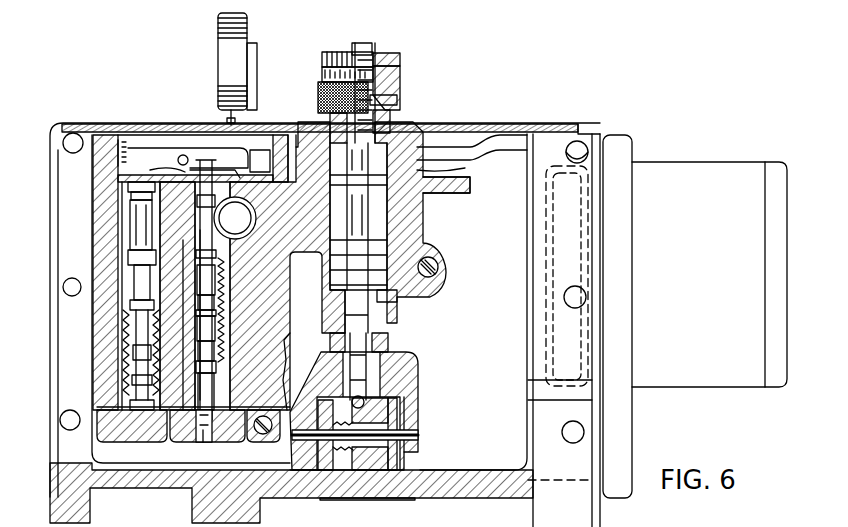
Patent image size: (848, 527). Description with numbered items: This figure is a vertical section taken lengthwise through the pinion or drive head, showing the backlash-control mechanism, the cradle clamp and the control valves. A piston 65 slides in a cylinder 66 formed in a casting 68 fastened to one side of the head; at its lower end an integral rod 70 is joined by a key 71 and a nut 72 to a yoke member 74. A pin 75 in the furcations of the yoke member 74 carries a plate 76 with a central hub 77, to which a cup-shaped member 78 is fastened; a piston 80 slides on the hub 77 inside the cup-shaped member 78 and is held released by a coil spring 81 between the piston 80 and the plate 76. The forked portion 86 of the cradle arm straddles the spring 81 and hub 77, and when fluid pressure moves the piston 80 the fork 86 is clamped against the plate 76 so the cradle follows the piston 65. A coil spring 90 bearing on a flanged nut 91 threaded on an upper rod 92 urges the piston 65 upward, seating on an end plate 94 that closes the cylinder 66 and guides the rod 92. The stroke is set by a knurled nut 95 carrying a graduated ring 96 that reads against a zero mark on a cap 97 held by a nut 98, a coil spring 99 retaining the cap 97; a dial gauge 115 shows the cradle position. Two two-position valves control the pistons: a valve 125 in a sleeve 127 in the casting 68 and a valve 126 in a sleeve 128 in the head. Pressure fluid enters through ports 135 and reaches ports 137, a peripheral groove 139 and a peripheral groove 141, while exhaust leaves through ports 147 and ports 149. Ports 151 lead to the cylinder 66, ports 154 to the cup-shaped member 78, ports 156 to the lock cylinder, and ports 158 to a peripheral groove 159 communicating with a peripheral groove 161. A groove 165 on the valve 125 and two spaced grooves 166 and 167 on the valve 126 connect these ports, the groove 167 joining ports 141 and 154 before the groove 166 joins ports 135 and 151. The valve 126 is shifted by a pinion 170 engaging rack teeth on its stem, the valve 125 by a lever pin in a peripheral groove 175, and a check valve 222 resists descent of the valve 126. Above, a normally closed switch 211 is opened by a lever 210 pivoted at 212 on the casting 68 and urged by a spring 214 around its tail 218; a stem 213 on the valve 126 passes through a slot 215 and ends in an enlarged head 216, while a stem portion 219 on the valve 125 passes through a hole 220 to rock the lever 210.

The piston 65 is at (412, 233).
The cylinder 66 is at (400, 303).
The casting 68 is at (413, 208).
The rod 70 is at (387, 343).
The key 71 is at (330, 345).
The nut 72 is at (405, 360).
The yoke member 74 is at (412, 380).
The pin 75 is at (415, 437).
The plate 76 is at (402, 462).
The hub 77 is at (300, 455).
The cup-shaped member 78 is at (341, 423).
The piston 80 is at (357, 398).
The coil spring 81 is at (407, 420).
The forked portion 86 is at (372, 470).
The coil spring 90 is at (408, 104).
The flanged nut 91 is at (402, 98).
The rod 92 is at (465, 170).
The end plate 94 is at (418, 128).
The knurled nut 95 is at (318, 97).
The graduated ring 96 is at (398, 80).
The cap 97 is at (398, 56).
The nut 98 is at (358, 43).
The coil spring 99 is at (376, 55).
The dial gauge 115 is at (217, 57).
The valve 125 is at (130, 210).
The valve 126 is at (232, 305).
The sleeve 127 is at (97, 412).
The sleeve 128 is at (176, 438).
The ports 135 is at (233, 288).
The ports 137 is at (118, 310).
The peripheral groove 139 is at (118, 355).
The peripheral groove 141 is at (230, 372).
The ports 147 is at (232, 263).
The ports 149 is at (230, 323).
The ports 151 is at (230, 268).
The ports 154 is at (232, 340).
The ports 156 is at (118, 316).
The ports 158 is at (118, 334).
The peripheral groove 159 is at (118, 377).
The peripheral groove 161 is at (232, 388).
The peripheral groove 165 is at (118, 333).
The peripheral groove 166 is at (300, 340).
The peripheral groove 167 is at (232, 355).
The pinion 170 is at (228, 205).
The peripheral groove 175 is at (125, 258).
The lever 210 is at (126, 164).
The switch 211 is at (258, 160).
The pivot 212 is at (175, 160).
The stem 213 is at (200, 205).
The spring 214 is at (122, 142).
The slot 215 is at (186, 163).
The enlarged head 216 is at (224, 175).
The tail 218 is at (118, 150).
The stem portion 219 is at (128, 196).
The hole 220 is at (118, 158).
The check valve 222 is at (190, 433).